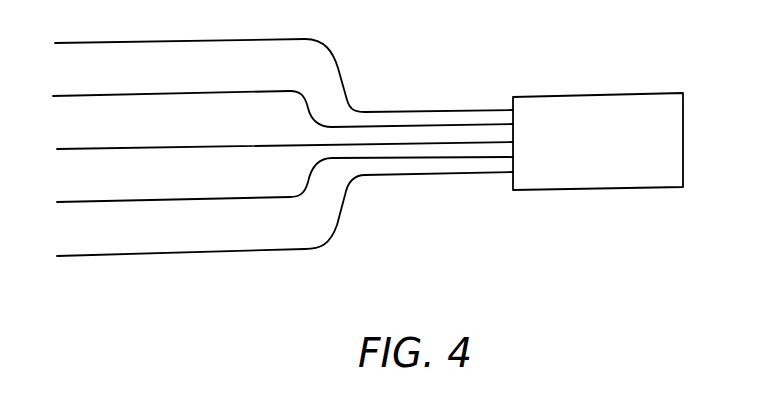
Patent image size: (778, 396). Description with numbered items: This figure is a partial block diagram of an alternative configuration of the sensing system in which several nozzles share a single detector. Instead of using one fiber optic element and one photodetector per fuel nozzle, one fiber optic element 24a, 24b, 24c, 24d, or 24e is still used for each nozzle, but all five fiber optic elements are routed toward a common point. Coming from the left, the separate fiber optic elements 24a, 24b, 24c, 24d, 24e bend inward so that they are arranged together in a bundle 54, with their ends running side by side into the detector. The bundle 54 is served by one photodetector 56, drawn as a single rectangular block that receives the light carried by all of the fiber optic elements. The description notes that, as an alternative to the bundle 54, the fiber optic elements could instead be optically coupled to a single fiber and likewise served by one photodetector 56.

The fiber optic element 24a is at (191, 41).
The fiber optic element 24b is at (191, 94).
The fiber optic element 24c is at (190, 146).
The fiber optic element 24d is at (200, 198).
The fiber optic element 24e is at (200, 252).
The bundle 54 is at (406, 196).
The photodetector 56 is at (591, 190).